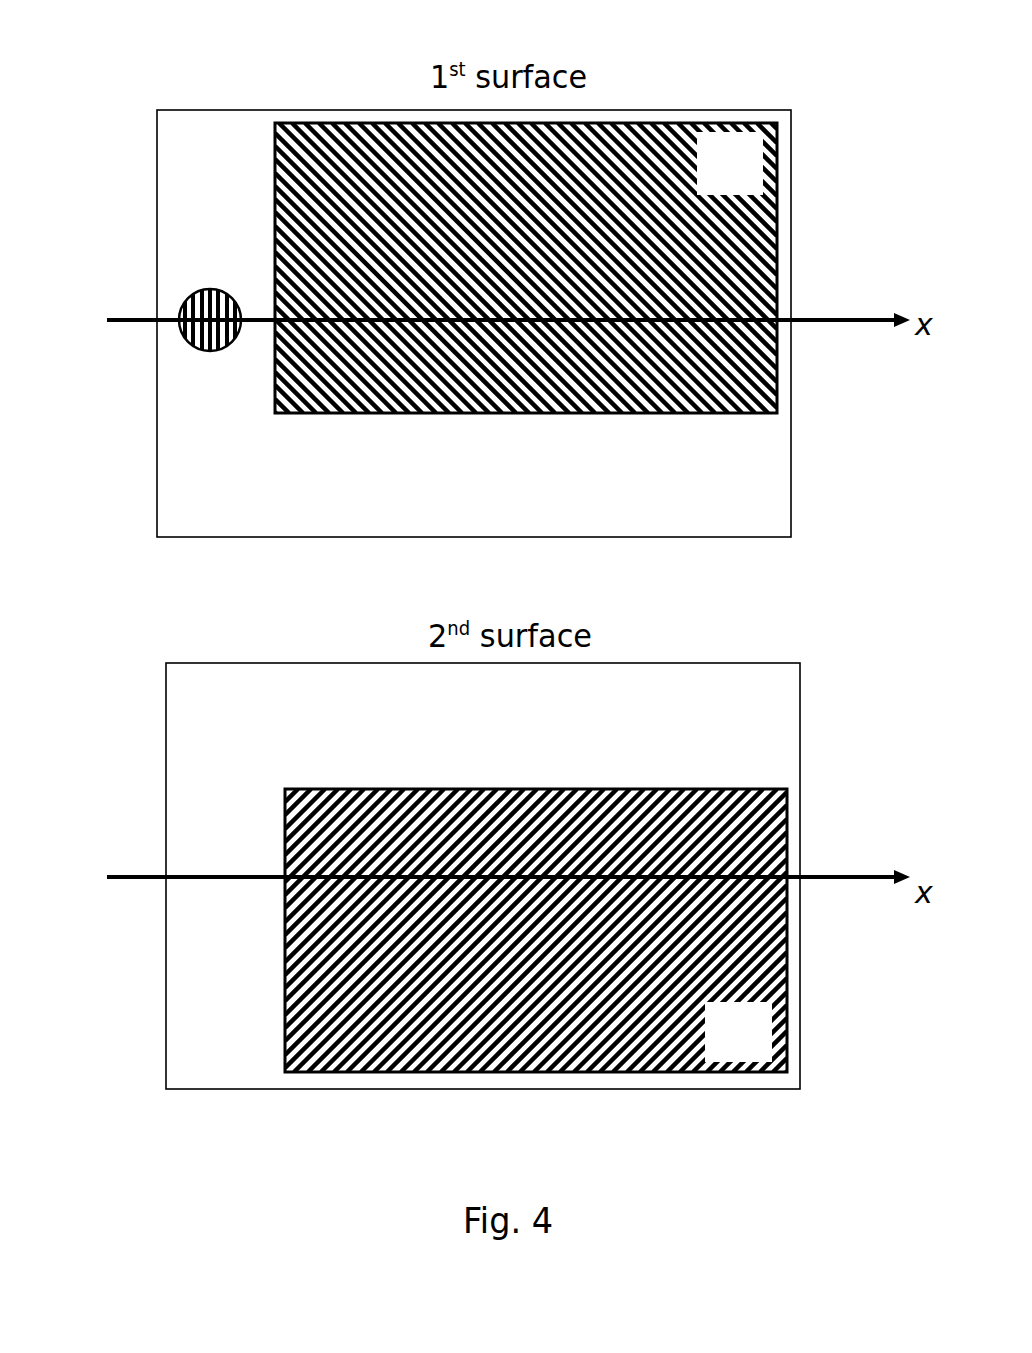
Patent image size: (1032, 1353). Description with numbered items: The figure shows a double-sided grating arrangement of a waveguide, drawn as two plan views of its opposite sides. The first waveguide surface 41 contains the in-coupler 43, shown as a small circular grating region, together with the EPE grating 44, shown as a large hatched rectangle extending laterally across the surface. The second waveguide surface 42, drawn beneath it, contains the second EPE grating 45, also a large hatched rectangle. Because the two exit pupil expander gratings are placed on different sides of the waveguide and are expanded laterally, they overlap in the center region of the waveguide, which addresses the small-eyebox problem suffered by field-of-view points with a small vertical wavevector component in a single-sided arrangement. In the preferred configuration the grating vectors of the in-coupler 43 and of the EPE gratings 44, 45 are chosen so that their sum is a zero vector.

The first waveguide surface 41 is at (157, 478).
The second waveguide surface 42 is at (165, 1037).
The in-coupler 43 is at (187, 302).
The EPE grating 44 is at (733, 397).
The second EPE grating 45 is at (638, 1048).